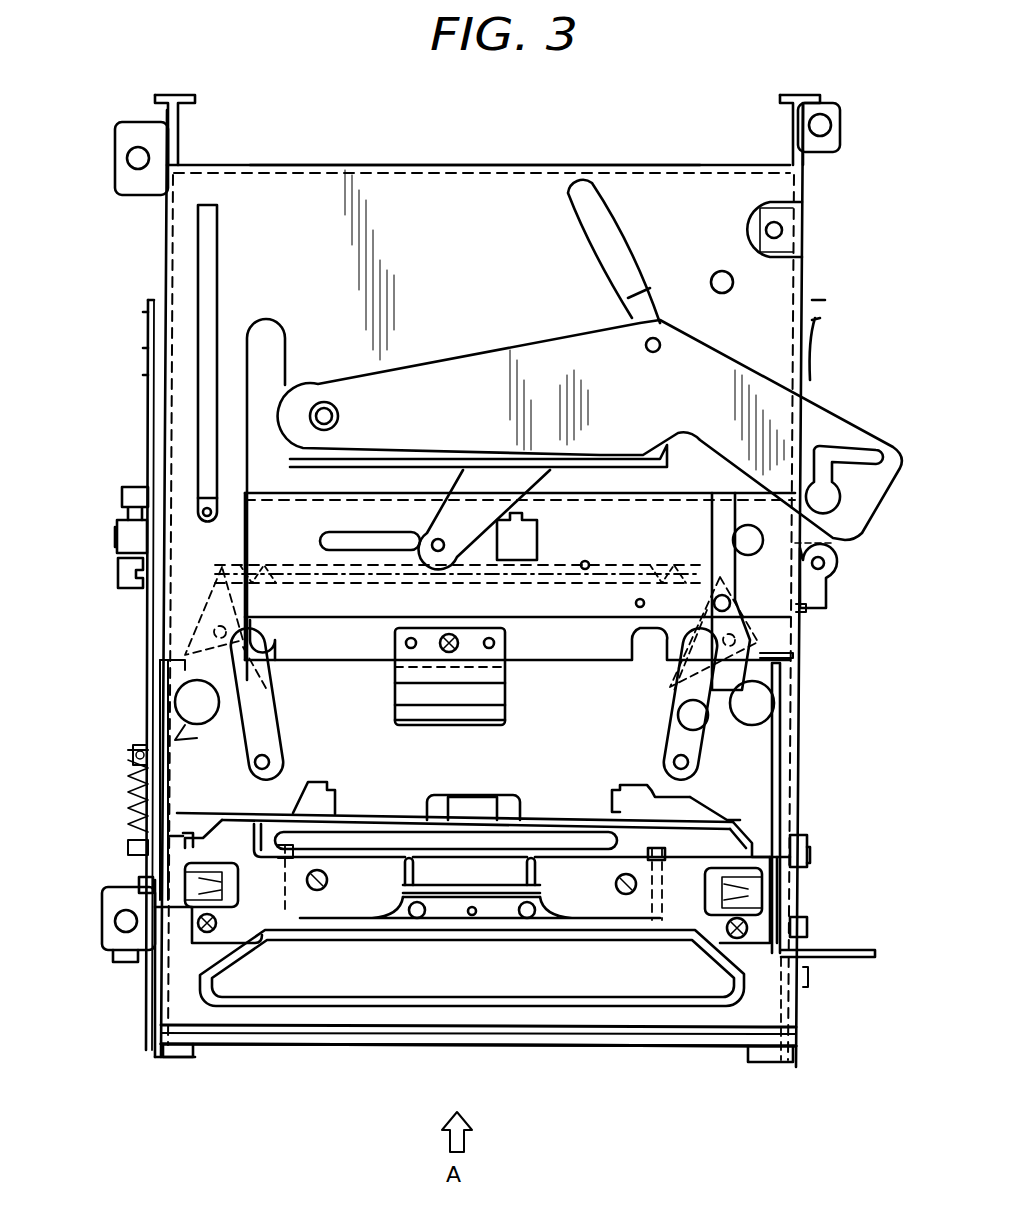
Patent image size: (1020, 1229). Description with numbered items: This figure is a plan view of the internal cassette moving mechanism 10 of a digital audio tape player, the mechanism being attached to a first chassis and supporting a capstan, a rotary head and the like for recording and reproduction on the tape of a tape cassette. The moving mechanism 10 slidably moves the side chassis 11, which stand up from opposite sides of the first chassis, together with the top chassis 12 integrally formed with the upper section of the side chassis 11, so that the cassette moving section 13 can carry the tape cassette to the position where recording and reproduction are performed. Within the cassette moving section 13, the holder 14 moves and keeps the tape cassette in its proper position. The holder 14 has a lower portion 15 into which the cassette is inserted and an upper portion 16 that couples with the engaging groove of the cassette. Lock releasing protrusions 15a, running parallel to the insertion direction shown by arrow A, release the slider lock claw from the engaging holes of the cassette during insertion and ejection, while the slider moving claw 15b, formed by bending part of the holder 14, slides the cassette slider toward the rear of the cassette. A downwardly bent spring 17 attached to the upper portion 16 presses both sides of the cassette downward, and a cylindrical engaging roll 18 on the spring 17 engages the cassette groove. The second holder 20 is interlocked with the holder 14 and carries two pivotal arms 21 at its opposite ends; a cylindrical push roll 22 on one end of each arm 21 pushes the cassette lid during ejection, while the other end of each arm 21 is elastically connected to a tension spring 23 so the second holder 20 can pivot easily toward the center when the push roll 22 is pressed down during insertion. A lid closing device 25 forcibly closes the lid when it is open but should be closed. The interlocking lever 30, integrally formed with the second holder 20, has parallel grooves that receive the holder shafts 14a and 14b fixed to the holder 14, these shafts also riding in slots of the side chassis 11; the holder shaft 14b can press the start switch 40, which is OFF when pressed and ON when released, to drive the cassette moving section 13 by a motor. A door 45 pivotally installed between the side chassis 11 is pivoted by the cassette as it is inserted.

The moving mechanism 10 is at (667, 124).
The side chassis 11 is at (160, 263).
The top chassis 12 is at (282, 184).
The cassette moving section 13 is at (872, 688).
The holder 14 is at (728, 812).
The holder shaft 14a is at (140, 885).
The holder shaft 14b is at (122, 497).
The lower portion 15 is at (690, 808).
The lock releasing protrusion 15a is at (268, 935).
The slider moving claw 15b is at (342, 795).
The upper portion 16 is at (797, 845).
The spring 17 is at (760, 905).
The cylindrical engaging roll 18 is at (480, 802).
The second holder 20 is at (703, 648).
The pivotal arm 21 is at (180, 740).
The cylindrical push roll 22 is at (290, 755).
The tension spring 23 is at (612, 575).
The lid closing device 25 is at (505, 700).
The interlocking lever 30 is at (165, 678).
The start switch 40 is at (118, 535).
The door 45 is at (330, 1047).